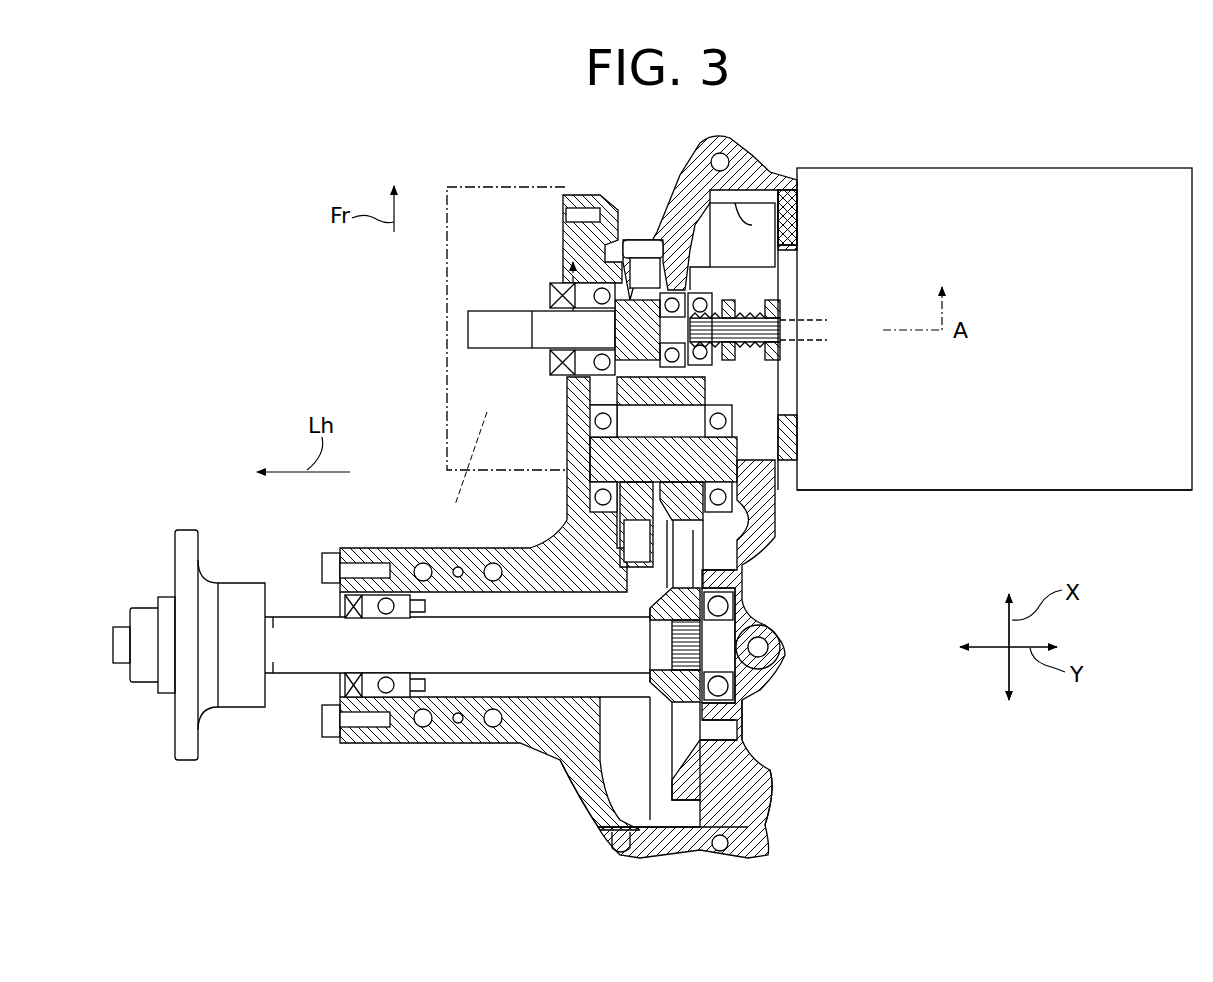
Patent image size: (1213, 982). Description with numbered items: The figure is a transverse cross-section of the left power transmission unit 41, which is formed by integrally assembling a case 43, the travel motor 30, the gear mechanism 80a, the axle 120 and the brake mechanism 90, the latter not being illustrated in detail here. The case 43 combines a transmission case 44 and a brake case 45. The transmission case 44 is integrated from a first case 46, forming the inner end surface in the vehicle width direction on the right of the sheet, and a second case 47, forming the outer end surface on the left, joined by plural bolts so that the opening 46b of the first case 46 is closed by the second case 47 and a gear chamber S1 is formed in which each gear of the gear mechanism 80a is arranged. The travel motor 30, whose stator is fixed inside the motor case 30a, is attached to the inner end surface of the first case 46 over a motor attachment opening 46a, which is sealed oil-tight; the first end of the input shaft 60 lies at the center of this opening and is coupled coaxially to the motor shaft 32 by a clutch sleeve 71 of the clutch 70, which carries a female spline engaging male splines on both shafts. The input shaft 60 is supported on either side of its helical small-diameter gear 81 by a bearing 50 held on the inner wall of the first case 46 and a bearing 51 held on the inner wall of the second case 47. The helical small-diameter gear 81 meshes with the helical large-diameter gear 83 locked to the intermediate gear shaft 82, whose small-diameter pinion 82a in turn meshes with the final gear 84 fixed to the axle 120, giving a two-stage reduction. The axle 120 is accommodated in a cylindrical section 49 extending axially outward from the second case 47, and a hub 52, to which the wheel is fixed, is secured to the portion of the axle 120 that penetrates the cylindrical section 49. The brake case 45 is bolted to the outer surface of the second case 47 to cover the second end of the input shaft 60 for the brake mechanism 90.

The travel motor 30 is at (997, 490).
The motor case 30a is at (1083, 490).
The motor shaft 32 is at (778, 338).
The power transmission unit 41 is at (807, 545).
The case 43 is at (770, 710).
The transmission case 44 is at (762, 782).
The brake case 45 is at (497, 186).
The first case 46 is at (750, 832).
The motor attachment opening 46a is at (788, 222).
The opening 46b is at (622, 845).
The second case 47 is at (575, 782).
The cylindrical section 49 is at (437, 744).
The bearing 50 is at (682, 285).
The bearing 51 is at (563, 377).
The hub 52 is at (242, 700).
The input shaft 60 is at (500, 340).
The clutch 70 is at (748, 352).
The clutch sleeve 71 is at (748, 308).
The gear mechanism 80a is at (703, 560).
The helical small-diameter gear 81 is at (622, 262).
The intermediate gear shaft 82 is at (745, 462).
The small-diameter pinion 82a is at (660, 515).
The helical large-diameter gear 83 is at (592, 402).
The final gear 84 is at (655, 732).
The brake mechanism 90 is at (460, 473).
The axle 120 is at (482, 745).
The gear chamber S1 is at (737, 745).